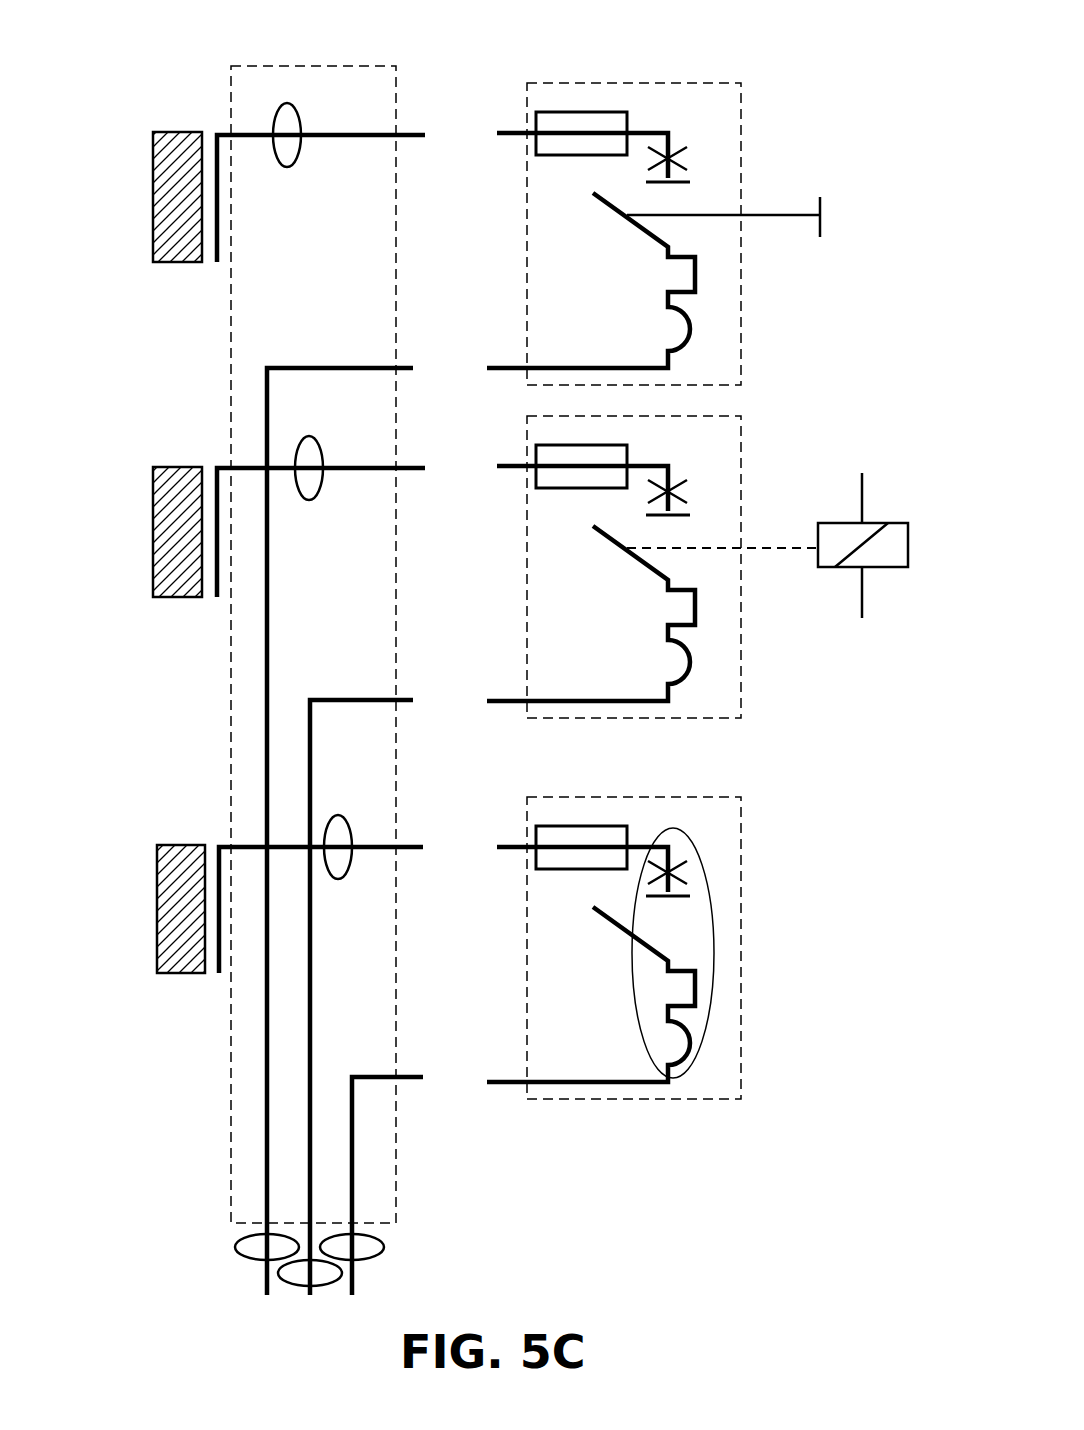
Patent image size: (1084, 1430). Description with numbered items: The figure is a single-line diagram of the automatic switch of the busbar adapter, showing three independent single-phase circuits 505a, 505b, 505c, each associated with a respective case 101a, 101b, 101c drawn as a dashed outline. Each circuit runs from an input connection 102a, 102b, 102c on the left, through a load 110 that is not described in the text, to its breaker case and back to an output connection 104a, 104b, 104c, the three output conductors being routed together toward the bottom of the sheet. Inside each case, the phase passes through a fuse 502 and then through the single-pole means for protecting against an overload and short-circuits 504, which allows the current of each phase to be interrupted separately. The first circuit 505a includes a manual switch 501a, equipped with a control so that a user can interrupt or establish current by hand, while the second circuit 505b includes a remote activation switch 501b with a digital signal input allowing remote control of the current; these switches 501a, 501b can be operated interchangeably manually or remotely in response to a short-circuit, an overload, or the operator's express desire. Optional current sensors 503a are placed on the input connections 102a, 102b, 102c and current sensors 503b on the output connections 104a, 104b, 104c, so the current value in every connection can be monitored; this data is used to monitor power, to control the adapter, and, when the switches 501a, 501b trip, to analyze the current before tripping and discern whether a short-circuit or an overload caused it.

The load 110 is at (170, 180).
The input connection 102a is at (215, 257).
The input connection 102b is at (215, 593).
The input connection 102c is at (222, 973).
The output connection 104a is at (267, 1278).
The output connection 104b is at (308, 1290).
The output connection 104c is at (353, 1278).
The current sensor for the input connections 503a is at (277, 118).
The current sensor for the output connections 503b is at (383, 1247).
The case 101a is at (713, 199).
The case 101b is at (723, 554).
The case 101c is at (685, 969).
The first single-phase circuit 505a is at (565, 82).
The second single-phase circuit 505b is at (745, 693).
The third single-phase circuit 505c is at (743, 1057).
The fuse 502 is at (622, 110).
The manual switch 501a is at (823, 203).
The remote activation switch 501b is at (888, 558).
The means for protecting against an overload and short-circuits 504 is at (710, 988).